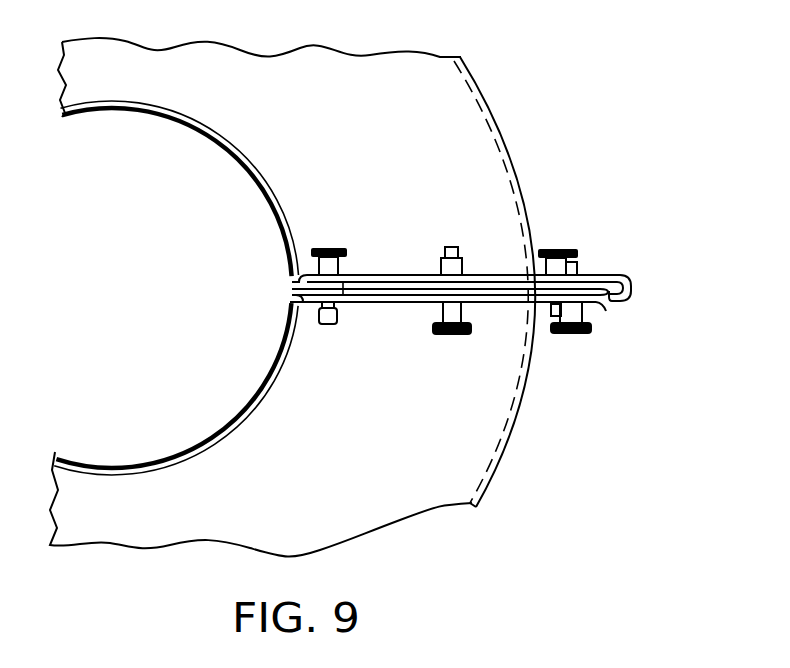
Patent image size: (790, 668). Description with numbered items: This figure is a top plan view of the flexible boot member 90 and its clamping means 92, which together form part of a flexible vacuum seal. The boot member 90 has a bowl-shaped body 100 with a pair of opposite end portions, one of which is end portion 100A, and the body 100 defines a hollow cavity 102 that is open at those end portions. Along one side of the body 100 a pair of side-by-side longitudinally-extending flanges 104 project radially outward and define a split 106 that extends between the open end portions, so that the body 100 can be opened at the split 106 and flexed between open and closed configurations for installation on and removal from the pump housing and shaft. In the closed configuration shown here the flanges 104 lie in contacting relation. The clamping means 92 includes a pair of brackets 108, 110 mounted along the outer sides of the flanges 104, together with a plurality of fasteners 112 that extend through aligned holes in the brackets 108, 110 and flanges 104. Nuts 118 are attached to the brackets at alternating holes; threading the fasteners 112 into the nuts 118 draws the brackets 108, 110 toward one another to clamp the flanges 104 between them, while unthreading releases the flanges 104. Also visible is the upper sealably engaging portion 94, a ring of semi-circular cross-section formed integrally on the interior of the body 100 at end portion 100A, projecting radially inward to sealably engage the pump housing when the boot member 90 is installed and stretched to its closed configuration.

The flexible boot member 90 is at (512, 139).
The clamping means 92 is at (606, 250).
The upper sealably engaging portion 94 is at (125, 462).
The bowl-shaped body 100 is at (211, 288).
The end portion 100A is at (259, 178).
The hollow cavity 102 is at (147, 282).
The flanges 104 is at (346, 302).
The split 106 is at (292, 306).
The bracket 108 is at (614, 276).
The bracket 110 is at (601, 305).
The fasteners 112 is at (337, 248).
The nuts 118 is at (462, 268).